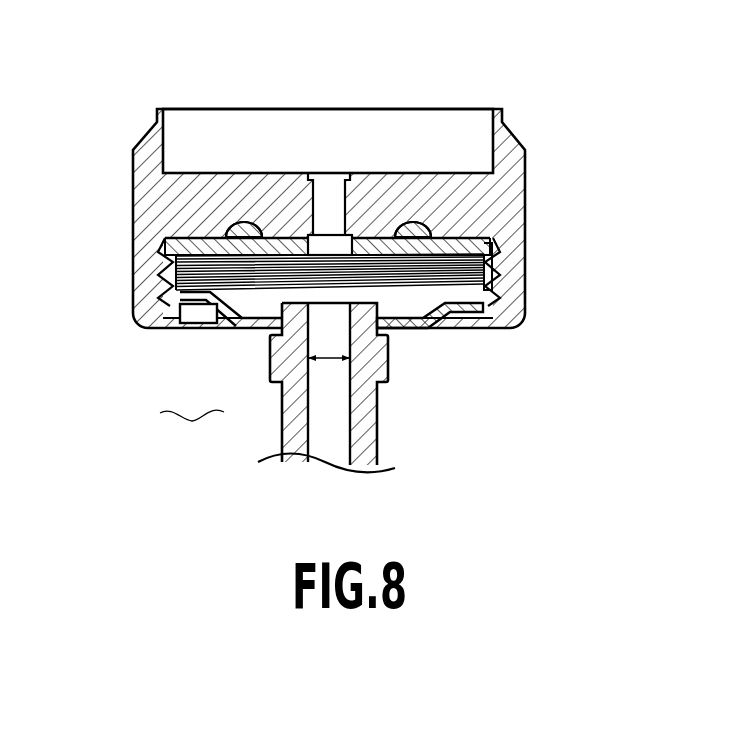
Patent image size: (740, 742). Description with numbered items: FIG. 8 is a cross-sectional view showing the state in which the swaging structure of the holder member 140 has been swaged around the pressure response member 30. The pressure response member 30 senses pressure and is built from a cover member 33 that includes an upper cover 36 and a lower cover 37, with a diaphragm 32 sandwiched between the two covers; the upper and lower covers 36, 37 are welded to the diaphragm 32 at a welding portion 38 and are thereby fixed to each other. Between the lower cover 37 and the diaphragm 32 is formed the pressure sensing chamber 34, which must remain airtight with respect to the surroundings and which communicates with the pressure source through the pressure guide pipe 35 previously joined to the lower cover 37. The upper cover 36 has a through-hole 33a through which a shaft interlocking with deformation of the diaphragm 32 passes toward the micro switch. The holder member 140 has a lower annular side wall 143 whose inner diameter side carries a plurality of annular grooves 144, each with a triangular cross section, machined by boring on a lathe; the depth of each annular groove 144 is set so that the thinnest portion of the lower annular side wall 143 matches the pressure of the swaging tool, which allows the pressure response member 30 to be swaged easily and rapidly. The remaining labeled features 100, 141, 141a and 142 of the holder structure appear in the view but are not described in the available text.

The pressure sensor 100 is at (652, 83).
The holder member 140 is at (535, 172).
The housing body 141 is at (220, 198).
The through hole 141a is at (333, 215).
The upper housing portion (recess) 142 is at (153, 160).
The lower annular side wall 143 is at (137, 322).
The annular groove 144 is at (500, 260).
The pressure response member 30 is at (406, 344).
The diaphragm 32 is at (264, 280).
The cover member 33 is at (221, 367).
The through-hole 33a is at (357, 245).
The pressure sensing chamber 34 is at (402, 298).
The pressure guide pipe 35 is at (377, 430).
The upper cover 36 is at (184, 280).
The lower cover 37 is at (233, 322).
The welding portion 38 is at (165, 262).